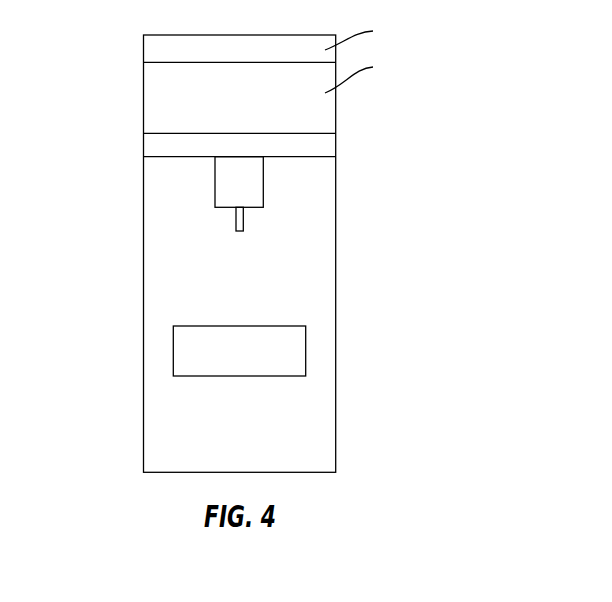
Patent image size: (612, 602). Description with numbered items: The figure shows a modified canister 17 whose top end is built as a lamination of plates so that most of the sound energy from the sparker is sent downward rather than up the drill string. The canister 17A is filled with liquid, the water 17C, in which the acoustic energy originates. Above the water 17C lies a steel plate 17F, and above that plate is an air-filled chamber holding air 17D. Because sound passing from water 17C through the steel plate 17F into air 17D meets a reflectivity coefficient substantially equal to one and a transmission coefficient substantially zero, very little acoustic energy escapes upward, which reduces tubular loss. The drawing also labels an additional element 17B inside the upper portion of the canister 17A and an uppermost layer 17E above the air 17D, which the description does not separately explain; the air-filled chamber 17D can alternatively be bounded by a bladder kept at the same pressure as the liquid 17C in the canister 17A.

The modified canister 17 is at (402, 305).
The canister 17A is at (337, 267).
The inlet fitting / valve 17B is at (240, 186).
The water 17C is at (163, 272).
The air 17D is at (163, 102).
The top steel plate 17E is at (163, 51).
The steel plate 17F is at (328, 155).